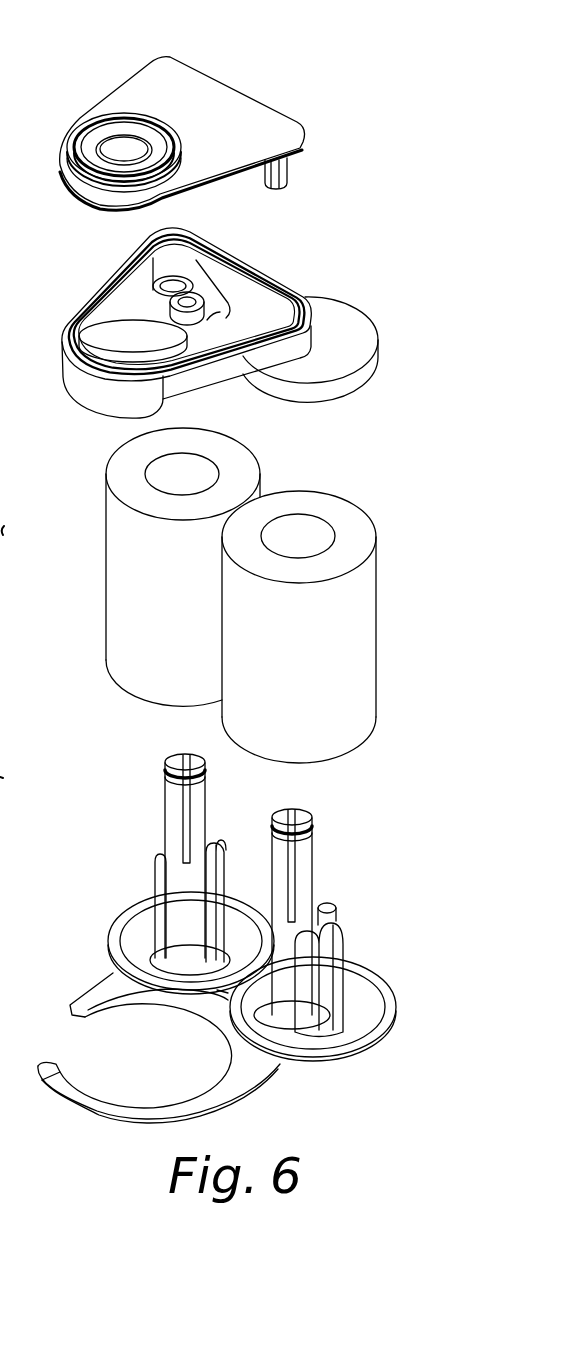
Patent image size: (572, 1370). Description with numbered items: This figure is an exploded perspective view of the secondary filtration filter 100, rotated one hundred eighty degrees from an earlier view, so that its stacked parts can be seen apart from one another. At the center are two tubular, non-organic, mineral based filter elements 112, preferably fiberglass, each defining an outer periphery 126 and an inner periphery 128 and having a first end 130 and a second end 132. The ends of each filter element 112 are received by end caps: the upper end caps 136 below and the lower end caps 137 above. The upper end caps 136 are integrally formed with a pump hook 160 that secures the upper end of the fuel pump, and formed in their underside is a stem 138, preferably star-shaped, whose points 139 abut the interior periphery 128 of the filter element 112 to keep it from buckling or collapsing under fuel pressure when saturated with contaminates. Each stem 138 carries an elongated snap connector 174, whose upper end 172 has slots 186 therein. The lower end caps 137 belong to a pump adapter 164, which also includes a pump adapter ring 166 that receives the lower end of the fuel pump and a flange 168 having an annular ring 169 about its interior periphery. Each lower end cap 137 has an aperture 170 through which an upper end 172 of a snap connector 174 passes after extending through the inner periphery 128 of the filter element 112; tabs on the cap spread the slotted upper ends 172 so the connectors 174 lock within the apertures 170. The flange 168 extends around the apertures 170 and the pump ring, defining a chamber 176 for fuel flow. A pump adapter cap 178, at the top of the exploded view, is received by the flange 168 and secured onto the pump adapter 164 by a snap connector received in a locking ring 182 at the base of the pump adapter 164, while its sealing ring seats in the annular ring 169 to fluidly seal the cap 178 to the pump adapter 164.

The secondary filtration filter 100 is at (99, 74).
The filter element 112 is at (252, 717).
The outer periphery 126 is at (240, 609).
The inner periphery 128 is at (290, 530).
The first end 130 is at (133, 692).
The second end 132 is at (125, 468).
The upper end caps 136 is at (140, 915).
The lower end caps 137 is at (113, 257).
The stem 138 is at (330, 915).
The points 139 is at (332, 945).
The pump hook 160 is at (143, 1107).
The pump adapter 164 is at (218, 312).
The pump adapter ring 166 is at (98, 403).
The flange 168 is at (92, 297).
The annular ring 169 is at (243, 290).
The aperture 170 is at (200, 240).
The upper end 172 is at (167, 755).
The elongated snap connector 174 is at (237, 884).
The chamber 176 is at (228, 300).
The pump adapter cap 178 is at (250, 103).
The locking ring 182 is at (210, 300).
The slots 186 is at (180, 810).